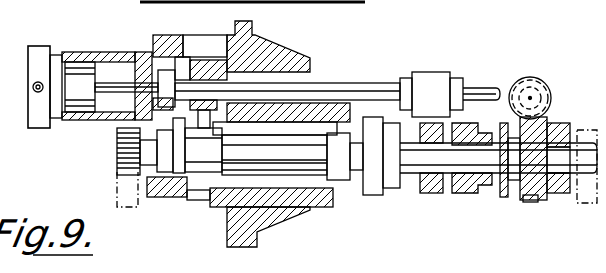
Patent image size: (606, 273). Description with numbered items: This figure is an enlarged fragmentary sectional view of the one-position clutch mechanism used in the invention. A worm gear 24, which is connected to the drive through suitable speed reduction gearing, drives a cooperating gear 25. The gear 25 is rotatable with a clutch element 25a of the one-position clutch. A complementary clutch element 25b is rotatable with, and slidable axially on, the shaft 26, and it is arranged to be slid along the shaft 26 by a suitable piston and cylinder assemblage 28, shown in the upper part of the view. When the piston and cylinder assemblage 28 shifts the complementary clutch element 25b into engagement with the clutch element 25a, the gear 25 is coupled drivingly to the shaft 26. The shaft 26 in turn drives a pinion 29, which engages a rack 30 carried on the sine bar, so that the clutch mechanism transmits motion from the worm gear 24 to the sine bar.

The worm gear 24 is at (548, 84).
The gear 25 is at (530, 197).
The clutch element 25a is at (508, 197).
The complementary clutch element 25b is at (482, 193).
The shaft 26 is at (433, 160).
The piston and cylinder assemblage 28 is at (110, 52).
The pinion 29 is at (117, 145).
The rack 30 is at (115, 193).